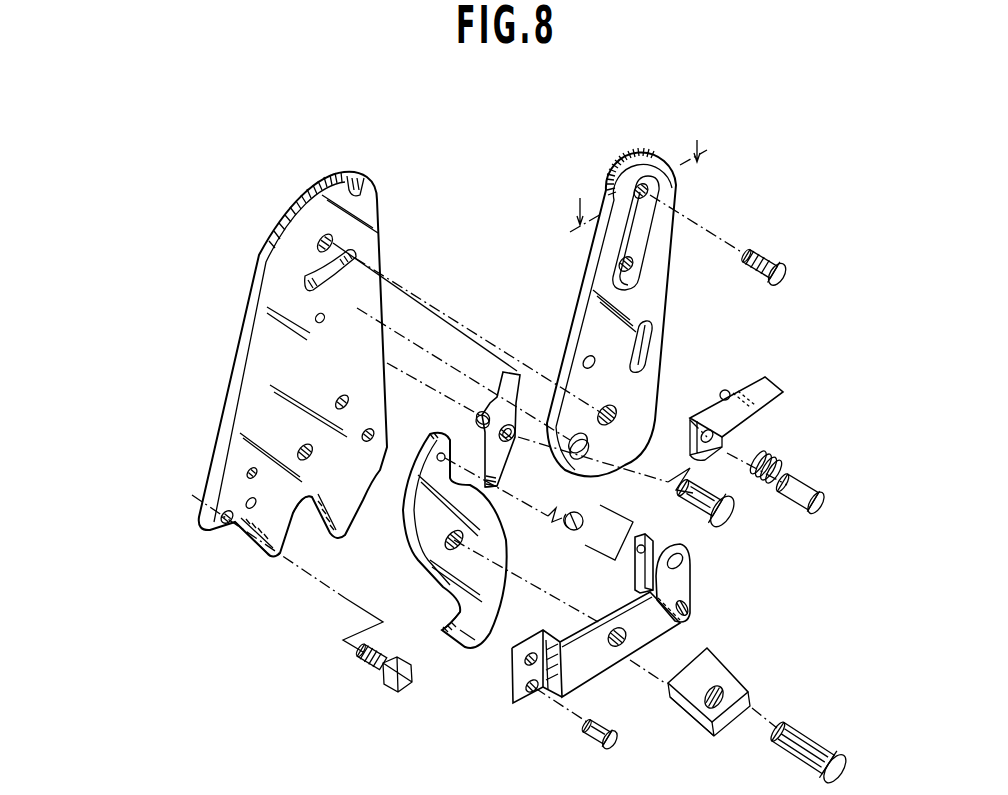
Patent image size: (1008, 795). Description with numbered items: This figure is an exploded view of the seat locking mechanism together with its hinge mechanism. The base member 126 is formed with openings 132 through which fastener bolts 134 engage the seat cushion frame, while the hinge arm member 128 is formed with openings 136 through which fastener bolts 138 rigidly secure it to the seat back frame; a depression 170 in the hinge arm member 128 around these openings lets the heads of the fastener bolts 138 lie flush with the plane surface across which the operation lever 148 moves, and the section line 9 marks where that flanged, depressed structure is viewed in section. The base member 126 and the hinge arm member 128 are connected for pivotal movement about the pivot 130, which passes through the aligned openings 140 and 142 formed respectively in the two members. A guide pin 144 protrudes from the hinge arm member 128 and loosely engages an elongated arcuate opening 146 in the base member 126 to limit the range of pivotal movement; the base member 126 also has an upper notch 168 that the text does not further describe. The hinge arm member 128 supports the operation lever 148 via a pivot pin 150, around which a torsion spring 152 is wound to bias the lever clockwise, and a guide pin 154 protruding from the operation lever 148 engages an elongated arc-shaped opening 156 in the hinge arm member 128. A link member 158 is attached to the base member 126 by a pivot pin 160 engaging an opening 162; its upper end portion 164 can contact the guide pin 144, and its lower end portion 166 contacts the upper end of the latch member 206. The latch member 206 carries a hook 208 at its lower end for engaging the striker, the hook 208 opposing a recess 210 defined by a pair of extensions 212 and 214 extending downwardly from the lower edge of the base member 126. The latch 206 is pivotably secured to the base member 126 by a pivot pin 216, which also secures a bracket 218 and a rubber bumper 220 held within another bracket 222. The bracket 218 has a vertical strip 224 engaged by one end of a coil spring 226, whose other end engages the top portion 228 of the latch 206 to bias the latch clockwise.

The section line 9 is at (635, 166).
The base member 126 is at (236, 380).
The hinge arm member 128 is at (588, 280).
The pivot 130 is at (650, 190).
The openings 132 is at (226, 527).
The fastener bolts 134 is at (400, 690).
The openings 136 is at (634, 270).
The fastener bolts 138 is at (790, 268).
The opening 140 is at (335, 240).
The opening 142 is at (615, 425).
The guide pin 144 is at (610, 478).
The elongated arcuate opening 146 is at (352, 262).
The operation lever 148 is at (773, 388).
The pivot pin 150 is at (812, 485).
The torsion spring 152 is at (778, 458).
The guide pin 154 is at (726, 392).
The elongated arc-shaped opening 156 is at (665, 336).
The link member 158 is at (517, 370).
The pivot pin 160 is at (514, 446).
The opening 162 is at (319, 324).
The upper end portion 164 is at (478, 412).
The lower end portion 166 is at (496, 490).
The notch 168 is at (364, 180).
The depression 170 is at (638, 232).
The latch member 206 is at (425, 543).
The hook 208 is at (484, 640).
The recess 210 is at (306, 565).
The extension 212 is at (278, 560).
The extension 214 is at (348, 516).
The pivot pin 216 is at (812, 737).
The bracket 218 is at (603, 672).
The rubber bumper 220 is at (737, 730).
The bracket 222 is at (730, 690).
The vertical strip 224 is at (650, 575).
The coil spring 226 is at (573, 532).
The top portion 228 is at (440, 452).